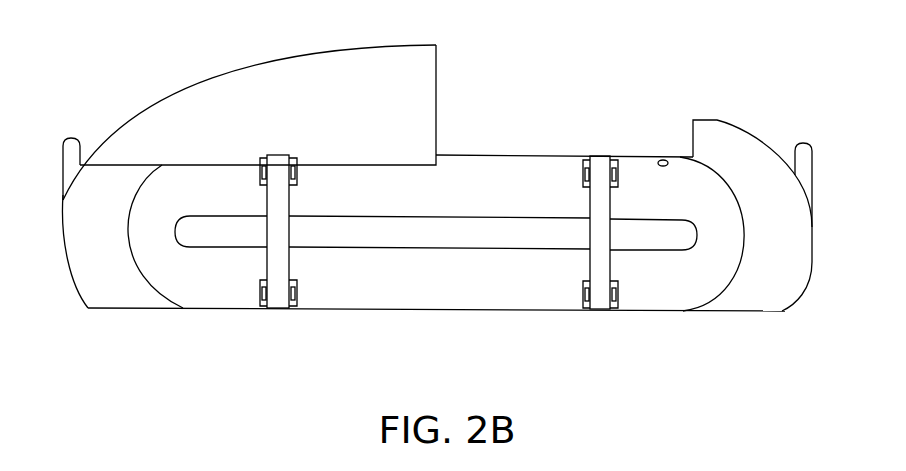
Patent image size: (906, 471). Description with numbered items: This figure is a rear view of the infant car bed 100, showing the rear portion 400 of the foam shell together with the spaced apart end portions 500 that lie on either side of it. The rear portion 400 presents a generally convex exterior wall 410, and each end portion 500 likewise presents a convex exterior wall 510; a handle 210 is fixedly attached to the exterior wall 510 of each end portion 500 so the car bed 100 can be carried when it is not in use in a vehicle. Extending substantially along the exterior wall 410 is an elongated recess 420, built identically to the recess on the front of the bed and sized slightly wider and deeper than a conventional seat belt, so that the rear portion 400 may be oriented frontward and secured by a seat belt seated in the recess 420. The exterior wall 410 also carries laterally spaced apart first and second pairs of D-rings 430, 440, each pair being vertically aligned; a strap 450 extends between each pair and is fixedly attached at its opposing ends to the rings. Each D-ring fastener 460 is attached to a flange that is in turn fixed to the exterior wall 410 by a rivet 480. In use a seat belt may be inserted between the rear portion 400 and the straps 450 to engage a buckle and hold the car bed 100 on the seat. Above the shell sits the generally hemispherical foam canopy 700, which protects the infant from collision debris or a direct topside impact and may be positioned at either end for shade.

The car bed 100 is at (629, 78).
The handle 210 is at (73, 147).
The rear portion 400 is at (436, 235).
The exterior wall 410 is at (530, 170).
The elongated recess 420 is at (432, 235).
The first pair of D-rings 430 is at (248, 285).
The second pair of D-rings 440 is at (627, 287).
The strap 450 is at (275, 220).
The fastener 460 is at (299, 170).
The rivet 480 is at (293, 188).
The end portion 500 is at (417, 227).
The exterior wall 510 is at (102, 260).
The canopy 700 is at (420, 52).